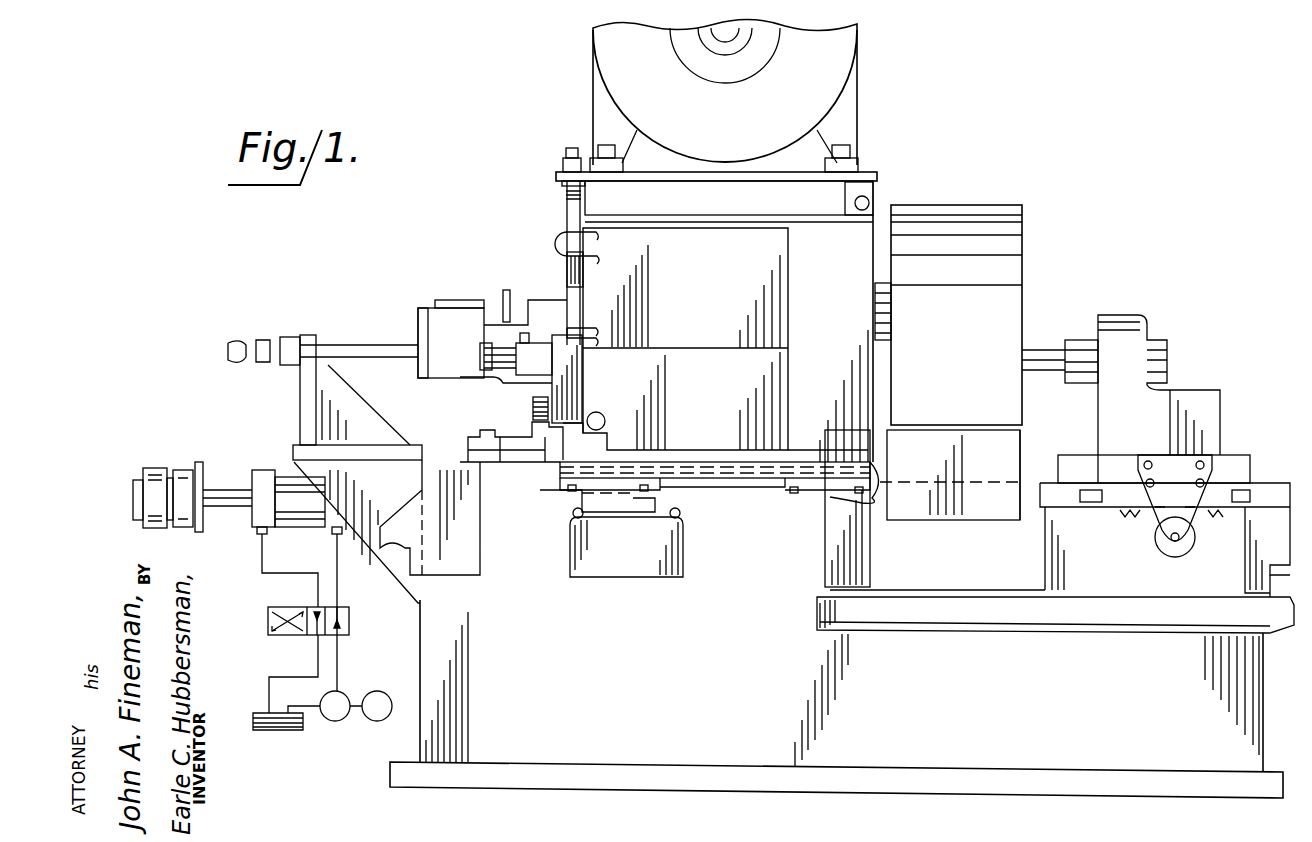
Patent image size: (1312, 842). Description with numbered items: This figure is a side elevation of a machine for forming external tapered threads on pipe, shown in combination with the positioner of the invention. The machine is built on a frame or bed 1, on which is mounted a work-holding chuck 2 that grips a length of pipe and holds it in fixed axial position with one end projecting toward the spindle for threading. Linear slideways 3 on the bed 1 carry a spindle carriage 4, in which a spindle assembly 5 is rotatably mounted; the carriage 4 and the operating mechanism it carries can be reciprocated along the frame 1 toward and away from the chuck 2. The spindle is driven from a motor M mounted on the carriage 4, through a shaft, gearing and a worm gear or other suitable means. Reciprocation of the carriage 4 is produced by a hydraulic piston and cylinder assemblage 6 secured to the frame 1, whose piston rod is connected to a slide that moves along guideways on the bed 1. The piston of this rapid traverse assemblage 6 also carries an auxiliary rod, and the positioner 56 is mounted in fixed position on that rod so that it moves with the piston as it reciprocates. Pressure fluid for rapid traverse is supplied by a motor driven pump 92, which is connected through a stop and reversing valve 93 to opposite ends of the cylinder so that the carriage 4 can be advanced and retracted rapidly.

The frame or bed 1 is at (842, 614).
The work-holding chuck 2 is at (1137, 315).
The linear slideways 3 is at (730, 480).
The spindle carriage 4 is at (712, 321).
The spindle assembly 5 is at (879, 275).
The hydraulic piston and cylinder assemblage 6 is at (266, 465).
The positioner 56 is at (181, 462).
The motor driven pump 92 is at (342, 722).
The stop and reversing valve 93 is at (270, 607).
The motor M is at (860, 66).